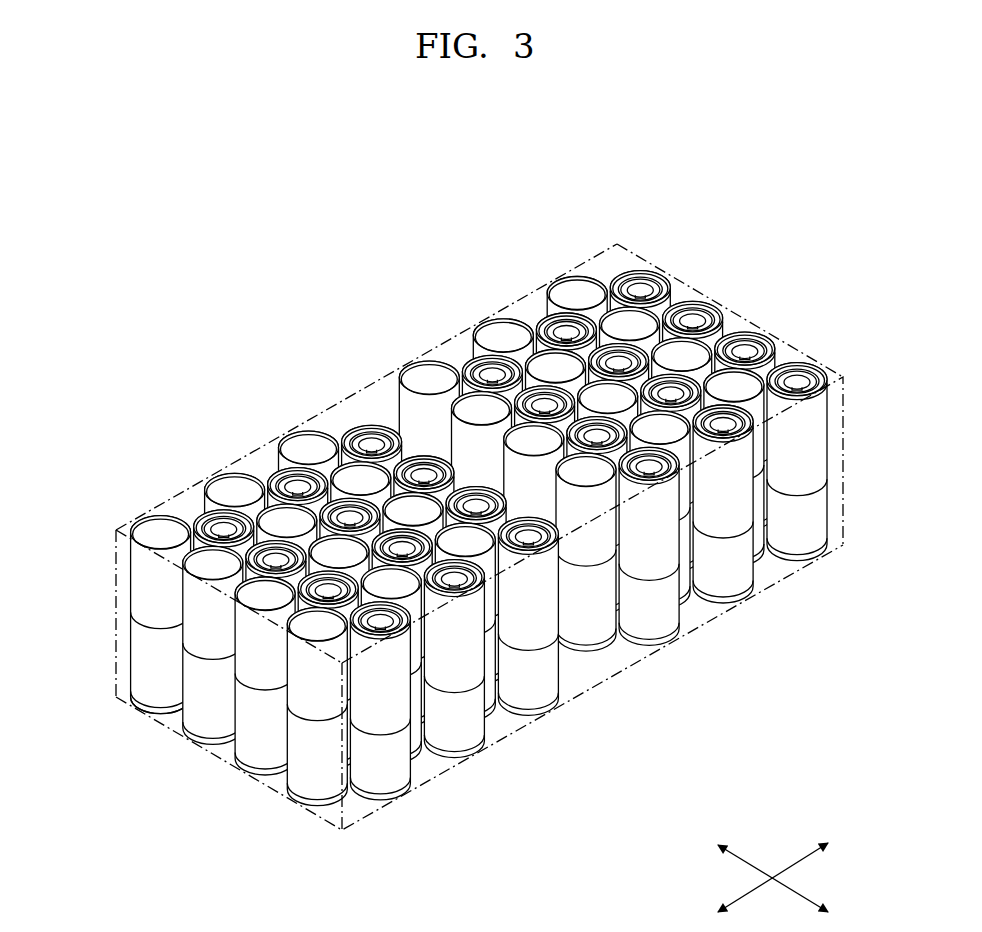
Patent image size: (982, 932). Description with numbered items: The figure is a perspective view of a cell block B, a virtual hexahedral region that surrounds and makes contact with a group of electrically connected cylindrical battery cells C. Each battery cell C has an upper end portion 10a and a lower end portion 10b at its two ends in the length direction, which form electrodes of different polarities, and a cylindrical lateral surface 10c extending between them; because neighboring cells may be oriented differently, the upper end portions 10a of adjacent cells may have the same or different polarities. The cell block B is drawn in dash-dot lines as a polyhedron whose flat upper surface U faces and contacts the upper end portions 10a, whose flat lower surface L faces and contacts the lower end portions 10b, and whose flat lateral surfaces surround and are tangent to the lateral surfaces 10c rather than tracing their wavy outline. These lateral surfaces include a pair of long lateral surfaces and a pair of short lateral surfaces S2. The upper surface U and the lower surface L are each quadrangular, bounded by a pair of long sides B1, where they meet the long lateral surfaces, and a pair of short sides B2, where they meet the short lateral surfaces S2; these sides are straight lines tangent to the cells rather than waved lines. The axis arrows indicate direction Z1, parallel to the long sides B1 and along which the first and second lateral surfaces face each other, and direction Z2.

The cell block B is at (120, 496).
The upper end portion 10a is at (158, 527).
The lower end portion 10b is at (167, 717).
The cylindrical lateral surface 10c is at (148, 662).
The battery cell C is at (126, 730).
The upper surface U is at (370, 408).
The lower surface L is at (577, 670).
The long sides B1 is at (458, 337).
The short sides B2 is at (688, 292).
The short lateral surface S2 is at (296, 815).
The direction Z1 is at (792, 867).
The direction Z2 is at (758, 867).